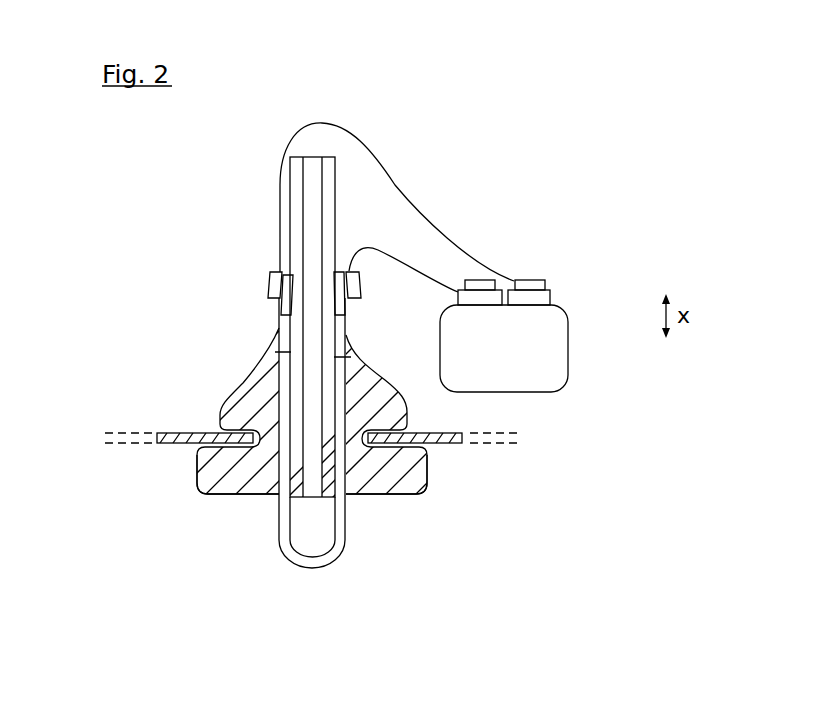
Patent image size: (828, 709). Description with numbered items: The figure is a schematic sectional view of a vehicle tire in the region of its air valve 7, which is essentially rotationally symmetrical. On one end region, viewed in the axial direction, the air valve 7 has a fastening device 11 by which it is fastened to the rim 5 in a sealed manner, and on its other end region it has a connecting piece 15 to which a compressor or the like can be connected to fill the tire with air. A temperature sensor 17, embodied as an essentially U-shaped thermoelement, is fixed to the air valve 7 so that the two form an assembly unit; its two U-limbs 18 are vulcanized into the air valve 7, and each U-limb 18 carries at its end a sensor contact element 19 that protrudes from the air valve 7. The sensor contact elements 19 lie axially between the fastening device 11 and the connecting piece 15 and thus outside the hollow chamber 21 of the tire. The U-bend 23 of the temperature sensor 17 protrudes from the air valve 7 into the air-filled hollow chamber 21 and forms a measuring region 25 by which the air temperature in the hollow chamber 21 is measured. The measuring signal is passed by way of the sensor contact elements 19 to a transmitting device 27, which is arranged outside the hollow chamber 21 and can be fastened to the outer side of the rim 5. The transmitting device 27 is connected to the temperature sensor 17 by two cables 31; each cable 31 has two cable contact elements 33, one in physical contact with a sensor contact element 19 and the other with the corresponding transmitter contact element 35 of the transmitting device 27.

The rim 5 is at (427, 433).
The air valve 7 is at (252, 402).
The fastening device 11 is at (178, 360).
The connecting piece 15 is at (236, 191).
The temperature sensor 17 is at (338, 483).
The U-limb 18 is at (277, 352).
The sensor contact element 19 is at (278, 307).
The hollow chamber 21 is at (557, 508).
The U-bend 23 is at (290, 558).
The measuring region 25 is at (338, 576).
The transmitting device 27 is at (555, 360).
The cable 31 is at (405, 188).
The cable contact element 33 is at (268, 283).
The transmitter contact element 35 is at (457, 297).